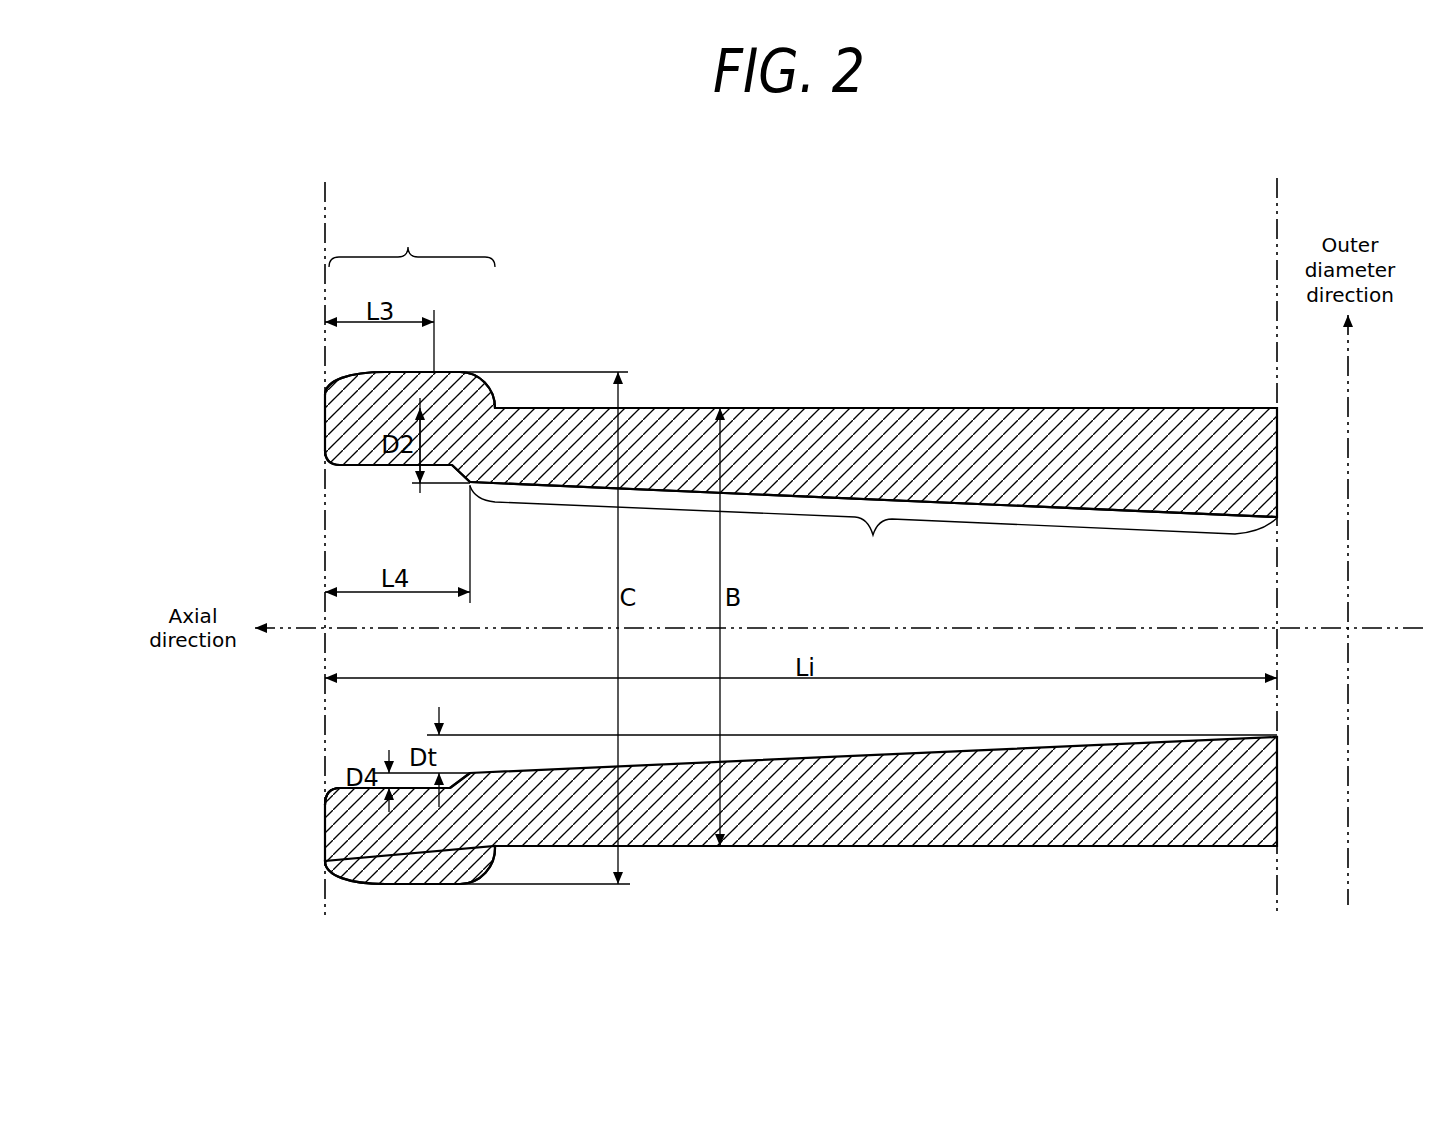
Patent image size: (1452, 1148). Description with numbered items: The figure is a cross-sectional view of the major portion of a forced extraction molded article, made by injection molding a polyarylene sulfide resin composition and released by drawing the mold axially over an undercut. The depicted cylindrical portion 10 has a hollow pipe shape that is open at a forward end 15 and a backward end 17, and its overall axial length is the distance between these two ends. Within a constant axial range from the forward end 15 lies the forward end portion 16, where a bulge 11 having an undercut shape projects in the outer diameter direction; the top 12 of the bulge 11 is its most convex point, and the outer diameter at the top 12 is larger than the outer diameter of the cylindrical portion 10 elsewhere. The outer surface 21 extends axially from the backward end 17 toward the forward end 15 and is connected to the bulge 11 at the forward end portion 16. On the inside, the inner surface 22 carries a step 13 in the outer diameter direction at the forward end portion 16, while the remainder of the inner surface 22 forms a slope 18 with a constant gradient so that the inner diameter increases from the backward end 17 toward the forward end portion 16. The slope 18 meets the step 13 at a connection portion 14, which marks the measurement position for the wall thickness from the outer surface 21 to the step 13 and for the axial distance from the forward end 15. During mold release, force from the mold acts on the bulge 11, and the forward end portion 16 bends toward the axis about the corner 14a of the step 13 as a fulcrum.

The cylindrical portion 10 is at (822, 253).
The bulge 11 is at (308, 372).
The top 12 is at (442, 366).
The step 13 is at (377, 476).
The connection portion 14 is at (463, 489).
The corner 14a is at (452, 462).
The forward end 15 is at (325, 533).
The forward end portion 16 is at (412, 239).
The backward end 17 is at (1277, 533).
The slope 18 is at (873, 527).
The outer surface 21 is at (945, 405).
The inner surface 22 is at (998, 507).